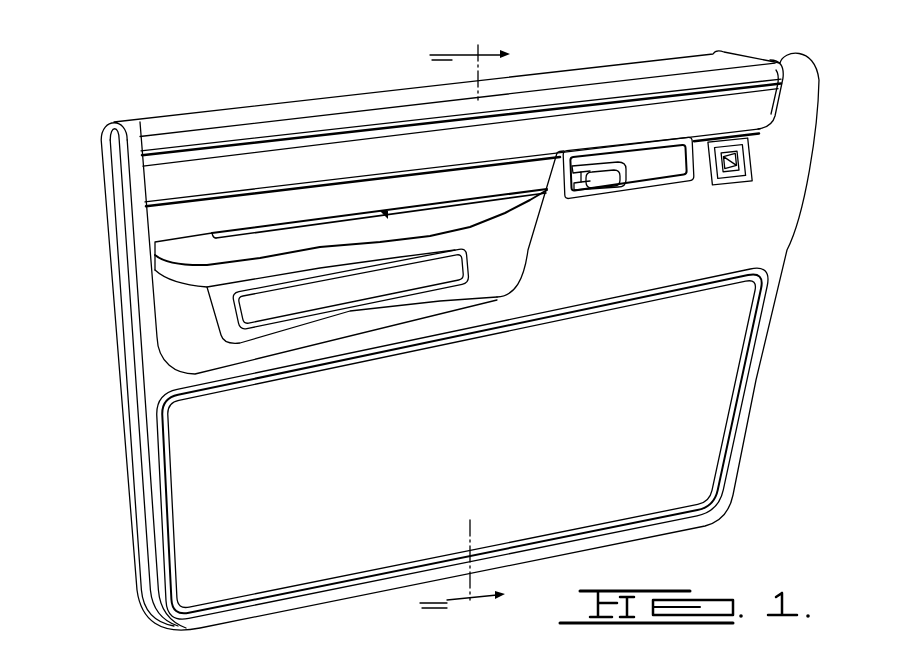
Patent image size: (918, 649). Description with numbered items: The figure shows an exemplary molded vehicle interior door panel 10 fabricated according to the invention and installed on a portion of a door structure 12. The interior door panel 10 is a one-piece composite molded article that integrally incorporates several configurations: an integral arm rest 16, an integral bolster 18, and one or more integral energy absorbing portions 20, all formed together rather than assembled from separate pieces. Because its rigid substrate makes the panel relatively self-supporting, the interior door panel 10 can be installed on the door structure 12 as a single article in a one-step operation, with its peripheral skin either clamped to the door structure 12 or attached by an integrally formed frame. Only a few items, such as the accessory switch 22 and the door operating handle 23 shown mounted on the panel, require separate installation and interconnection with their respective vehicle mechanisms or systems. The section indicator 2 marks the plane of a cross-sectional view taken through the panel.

The section line 2- 2 is at (477, 326).
The interior door panel 10 is at (740, 260).
The door structure 12 is at (112, 358).
The integral arm rest 16 is at (518, 212).
The integral bolster 18 is at (498, 258).
The integral energy absorbing portions 20 is at (306, 122).
The accessory switch 22 is at (755, 165).
The door operating handle 23 is at (656, 184).